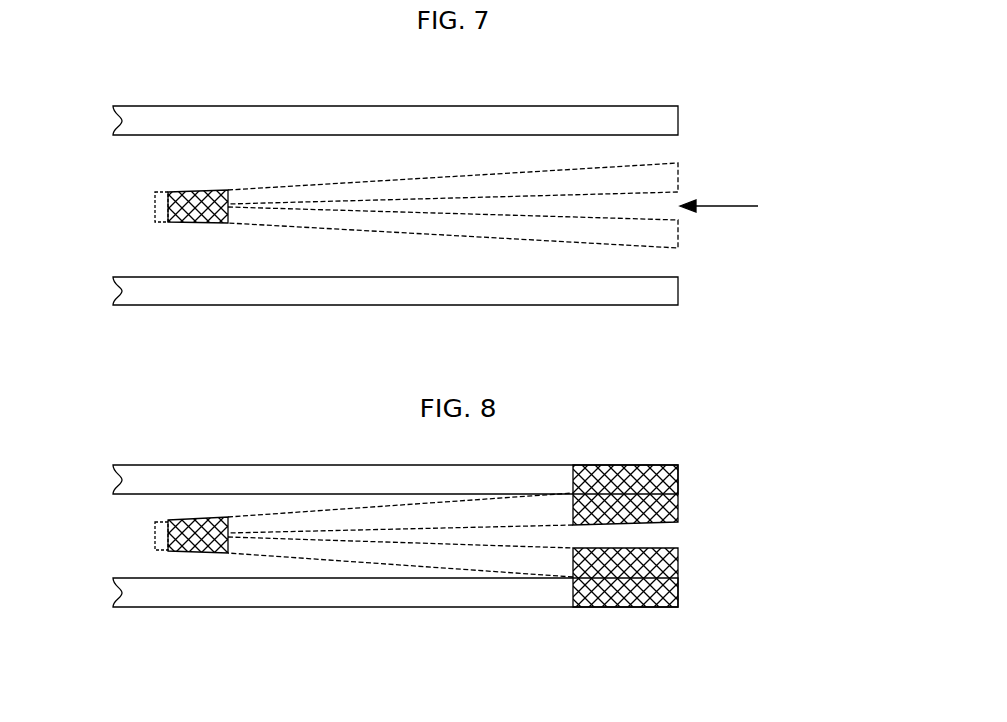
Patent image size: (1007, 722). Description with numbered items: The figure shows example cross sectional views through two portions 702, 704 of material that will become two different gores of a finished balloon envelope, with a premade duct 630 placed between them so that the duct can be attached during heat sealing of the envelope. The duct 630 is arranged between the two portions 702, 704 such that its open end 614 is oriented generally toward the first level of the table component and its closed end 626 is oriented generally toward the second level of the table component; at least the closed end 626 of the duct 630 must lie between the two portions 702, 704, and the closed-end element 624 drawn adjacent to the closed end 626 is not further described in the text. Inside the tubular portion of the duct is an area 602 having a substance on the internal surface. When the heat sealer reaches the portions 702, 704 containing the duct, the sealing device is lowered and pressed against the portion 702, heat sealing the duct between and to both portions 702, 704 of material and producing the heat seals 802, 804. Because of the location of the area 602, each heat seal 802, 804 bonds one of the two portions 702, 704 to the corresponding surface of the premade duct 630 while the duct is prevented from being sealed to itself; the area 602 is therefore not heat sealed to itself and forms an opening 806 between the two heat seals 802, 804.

In FIG. 7, the portion of material 702 is at (170, 106).
In FIG. 8, the portion of material 702 is at (170, 465).
In FIG. 7, the portion of material 704 is at (227, 305).
In FIG. 8, the portion of material 704 is at (227, 607).
In FIG. 7, the premade duct 630 is at (368, 179).
In FIG. 8, the premade duct 630 is at (372, 507).
In FIG. 7, the area having the substance 602 is at (453, 198).
In FIG. 8, the area having the substance 602 is at (446, 528).
In FIG. 7, the fiber tip / hatched coupling element 624 is at (207, 190).
In FIG. 8, the fiber tip / hatched coupling element 624 is at (168, 522).
In FIG. 7, the closed end 626 is at (155, 207).
In FIG. 8, the closed end 626 is at (155, 537).
In FIG. 7, the open end 614 is at (738, 205).
In FIG. 8, the heat seal 802 is at (587, 465).
In FIG. 8, the heat seal 804 is at (644, 607).
In FIG. 8, the opening 806 is at (594, 537).